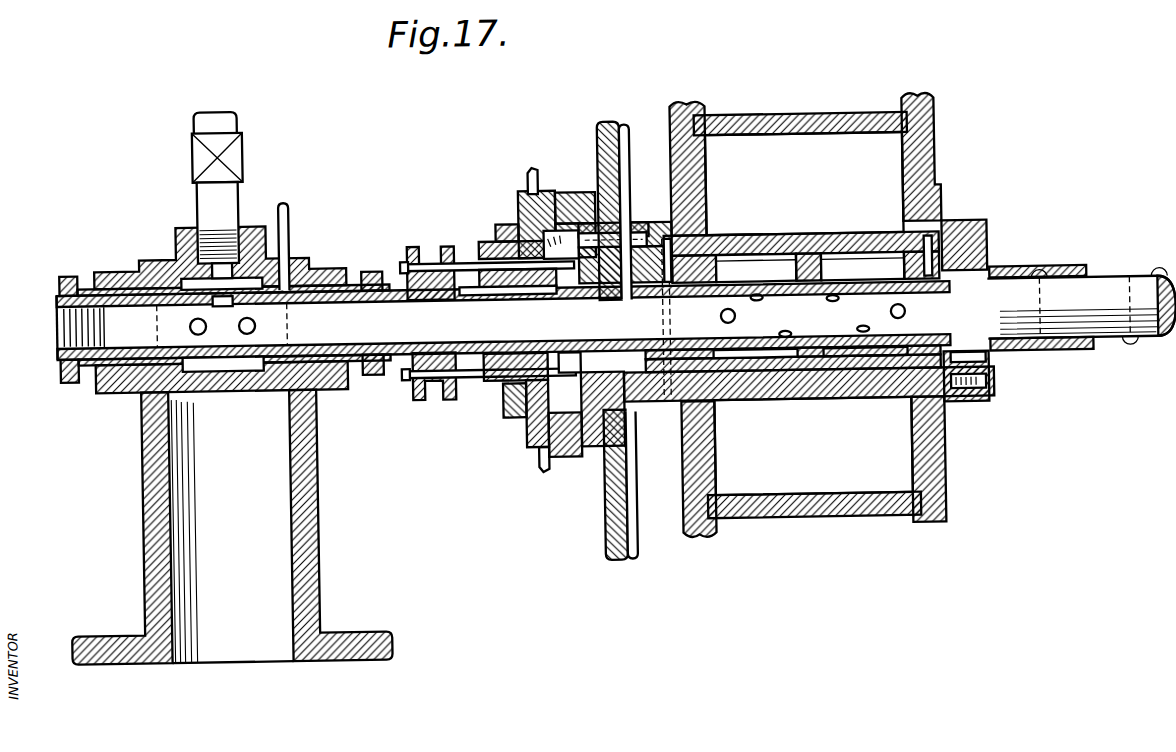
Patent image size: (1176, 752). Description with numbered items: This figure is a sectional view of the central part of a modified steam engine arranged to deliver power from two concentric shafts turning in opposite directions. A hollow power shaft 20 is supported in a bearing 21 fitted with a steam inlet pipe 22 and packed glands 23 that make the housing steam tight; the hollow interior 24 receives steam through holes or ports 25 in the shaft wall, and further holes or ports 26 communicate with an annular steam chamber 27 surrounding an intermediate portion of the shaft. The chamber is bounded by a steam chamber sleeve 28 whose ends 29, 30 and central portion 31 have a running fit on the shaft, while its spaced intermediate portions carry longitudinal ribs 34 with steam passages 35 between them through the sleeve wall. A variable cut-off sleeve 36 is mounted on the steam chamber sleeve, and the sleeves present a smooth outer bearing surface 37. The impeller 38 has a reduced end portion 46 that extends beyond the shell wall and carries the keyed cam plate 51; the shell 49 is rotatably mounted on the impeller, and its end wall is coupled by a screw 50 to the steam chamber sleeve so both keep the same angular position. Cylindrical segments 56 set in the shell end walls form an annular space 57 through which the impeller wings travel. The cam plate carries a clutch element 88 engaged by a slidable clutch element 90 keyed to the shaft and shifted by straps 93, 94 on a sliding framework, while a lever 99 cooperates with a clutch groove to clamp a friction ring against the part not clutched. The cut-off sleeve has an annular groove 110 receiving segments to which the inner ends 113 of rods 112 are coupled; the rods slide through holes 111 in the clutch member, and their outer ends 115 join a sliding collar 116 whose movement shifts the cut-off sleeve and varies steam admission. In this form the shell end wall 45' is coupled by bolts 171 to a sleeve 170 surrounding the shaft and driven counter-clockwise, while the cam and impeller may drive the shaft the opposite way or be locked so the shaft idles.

The power shaft 20 is at (60, 343).
The bearing 21 is at (316, 518).
The steam inlet pipe 22 is at (199, 196).
The packed glands 23 is at (70, 268).
The hollow interior of shaft 24 is at (504, 321).
The holes or ports 25 is at (206, 319).
The holes or ports 26 is at (737, 321).
The steam chamber 27 is at (838, 274).
The steam chamber sleeve 28 is at (722, 273).
The end of steam chamber sleeve 29 is at (905, 267).
The end of steam chamber sleeve 30 is at (698, 295).
The central portion of steam chamber sleeve 31 is at (809, 296).
The longitudinal ribs 34 is at (756, 353).
The steam passages 35 is at (767, 273).
The variable cut-off sleeve 36 is at (634, 262).
The outer bearing surface 37 is at (760, 398).
The impeller 38 is at (858, 396).
The shell end wall 45' is at (959, 458).
The reduced end portion of impeller 46 is at (714, 468).
The shell 49 is at (807, 347).
The screw 50 is at (988, 371).
The cam plate 51 is at (600, 520).
The cylindrical segments 56 is at (800, 120).
The annular space 57 is at (813, 446).
The clutch element 88 is at (581, 191).
The clutch element 90 is at (521, 226).
The strap 93 is at (516, 445).
The strap 94 is at (504, 418).
The lever 99 is at (532, 178).
The annular groove 110 is at (576, 366).
The holes 111 is at (482, 380).
The rods 112 is at (466, 260).
The inner ends of rods 113 is at (408, 379).
The outer ends of rods 115 is at (408, 254).
The sliding collar 116 is at (440, 290).
The sleeve 170 is at (988, 254).
The bolts 171 is at (990, 396).